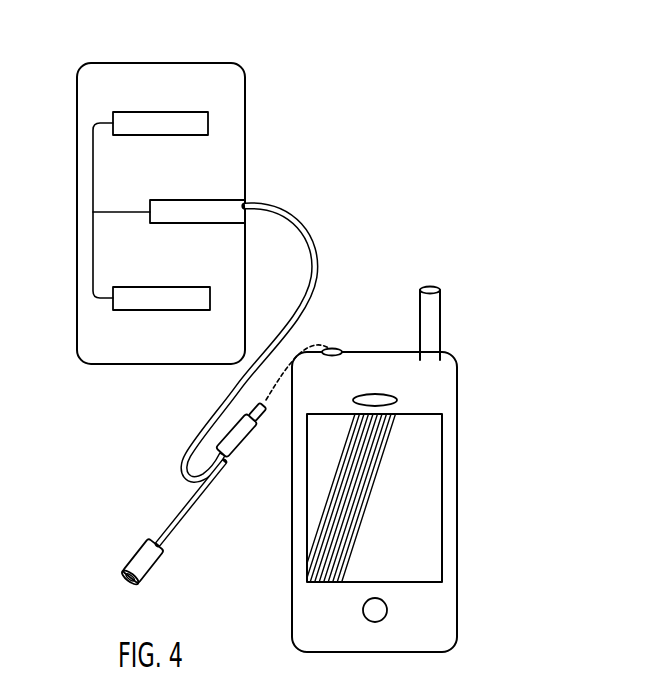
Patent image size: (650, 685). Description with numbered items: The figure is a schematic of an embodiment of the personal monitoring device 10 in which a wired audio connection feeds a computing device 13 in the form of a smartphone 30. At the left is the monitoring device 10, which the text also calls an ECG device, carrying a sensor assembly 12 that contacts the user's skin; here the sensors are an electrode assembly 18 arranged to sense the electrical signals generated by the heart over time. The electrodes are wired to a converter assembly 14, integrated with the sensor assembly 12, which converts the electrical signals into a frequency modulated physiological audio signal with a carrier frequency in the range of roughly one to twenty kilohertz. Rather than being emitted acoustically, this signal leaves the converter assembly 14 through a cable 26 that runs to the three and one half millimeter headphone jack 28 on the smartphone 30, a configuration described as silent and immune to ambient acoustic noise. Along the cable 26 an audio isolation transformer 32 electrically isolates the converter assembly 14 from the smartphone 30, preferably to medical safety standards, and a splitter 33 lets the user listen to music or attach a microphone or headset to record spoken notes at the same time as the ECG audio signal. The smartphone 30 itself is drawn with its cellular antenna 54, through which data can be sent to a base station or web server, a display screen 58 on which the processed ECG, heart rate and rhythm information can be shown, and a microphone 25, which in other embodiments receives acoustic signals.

The personal monitoring device 10 is at (262, 68).
The sensor assembly 12 is at (113, 196).
The electrode assembly 18 is at (128, 118).
The converter assembly 14 is at (215, 207).
The cable 26 is at (210, 418).
The splitter 33 is at (184, 470).
The audio isolation transformer 32 is at (243, 449).
The computing device 13 is at (374, 443).
The smartphone 30 is at (374, 332).
The headphone jack 28 is at (333, 349).
The cellular antenna 54 is at (434, 287).
The display screen 58 is at (342, 520).
The microphone 25 is at (363, 610).